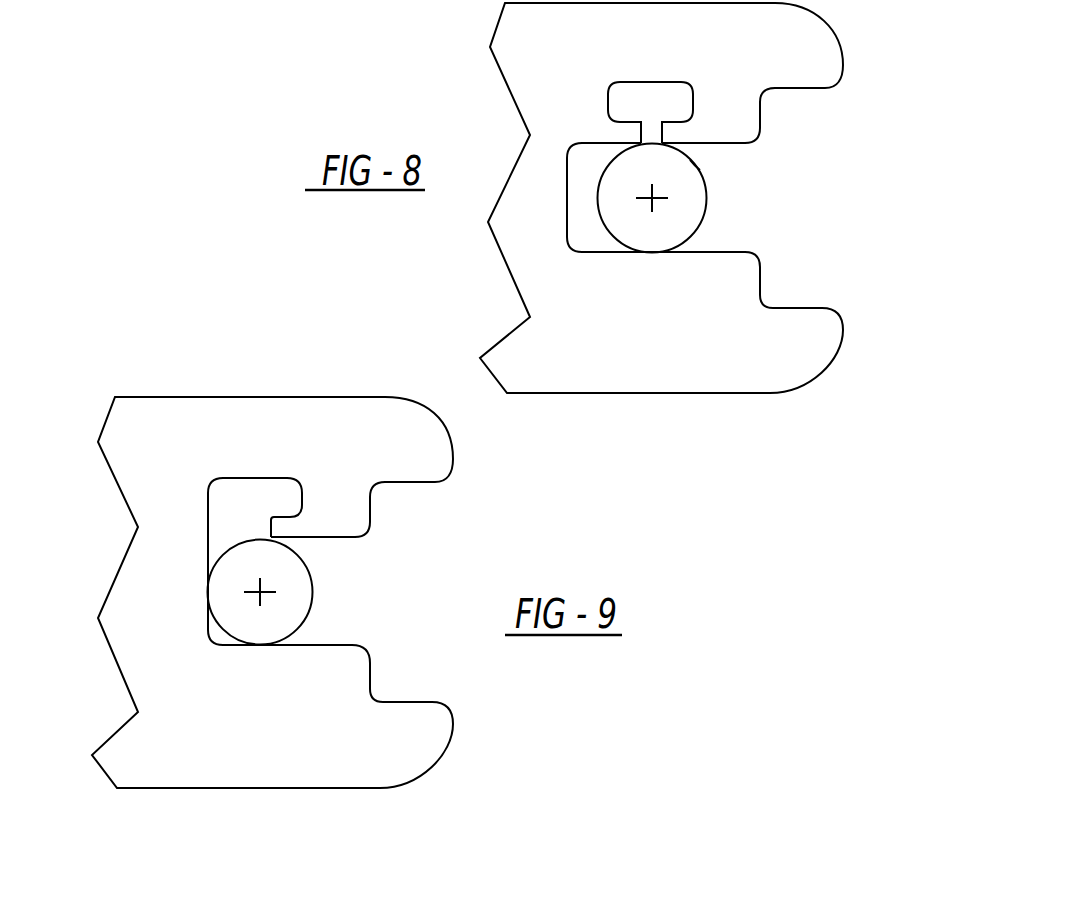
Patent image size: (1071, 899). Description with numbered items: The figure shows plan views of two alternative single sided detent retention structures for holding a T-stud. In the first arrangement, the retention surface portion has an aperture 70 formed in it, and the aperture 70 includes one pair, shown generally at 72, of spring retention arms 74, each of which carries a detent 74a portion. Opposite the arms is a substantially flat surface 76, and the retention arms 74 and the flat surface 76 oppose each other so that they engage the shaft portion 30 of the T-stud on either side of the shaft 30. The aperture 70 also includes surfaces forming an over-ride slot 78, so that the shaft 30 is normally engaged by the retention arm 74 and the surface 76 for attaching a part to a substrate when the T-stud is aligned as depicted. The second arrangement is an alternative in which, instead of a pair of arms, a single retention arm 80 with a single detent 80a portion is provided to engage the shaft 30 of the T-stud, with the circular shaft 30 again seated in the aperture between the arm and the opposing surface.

In FIG. 8, the shaft portion 30 is at (703, 217).
In FIG. 9, the shaft portion 30 is at (315, 598).
In FIG. 8, the aperture 70 is at (718, 144).
In FIG. 8, the pair of spring retention arms 72 is at (698, 152).
In FIG. 8, the spring retention arm 74 is at (630, 137).
In FIG. 8, the detent portion 74a is at (630, 148).
In FIG. 8, the substantially flat surface 76 is at (697, 252).
In FIG. 8, the over-ride slot 78 is at (567, 193).
In FIG. 9, the single retention arm 80 is at (298, 527).
In FIG. 9, the single detent portion 80a is at (285, 540).